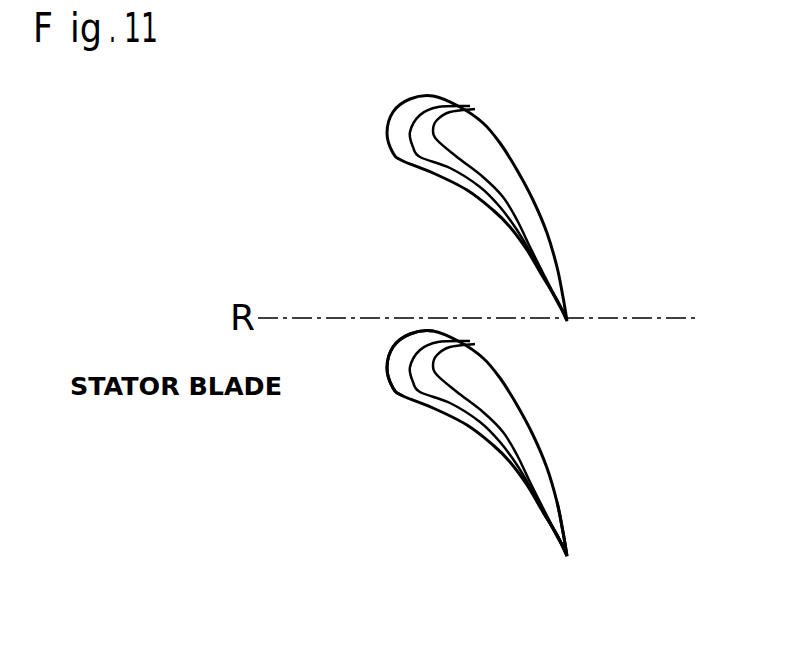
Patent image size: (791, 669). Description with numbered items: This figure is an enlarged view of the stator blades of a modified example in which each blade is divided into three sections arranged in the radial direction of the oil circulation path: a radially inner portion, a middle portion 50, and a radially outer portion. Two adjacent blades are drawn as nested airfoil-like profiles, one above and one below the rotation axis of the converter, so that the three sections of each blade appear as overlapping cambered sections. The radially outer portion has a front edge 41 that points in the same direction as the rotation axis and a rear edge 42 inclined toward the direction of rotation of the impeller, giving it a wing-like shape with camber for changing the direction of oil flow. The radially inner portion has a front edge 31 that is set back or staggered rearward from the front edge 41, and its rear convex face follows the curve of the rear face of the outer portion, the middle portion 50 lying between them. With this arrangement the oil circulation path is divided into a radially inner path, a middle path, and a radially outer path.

The front edge 31 is at (435, 345).
The front edge 41 is at (387, 370).
The middle portion 50 is at (423, 392).
The rear edge 42 is at (567, 563).